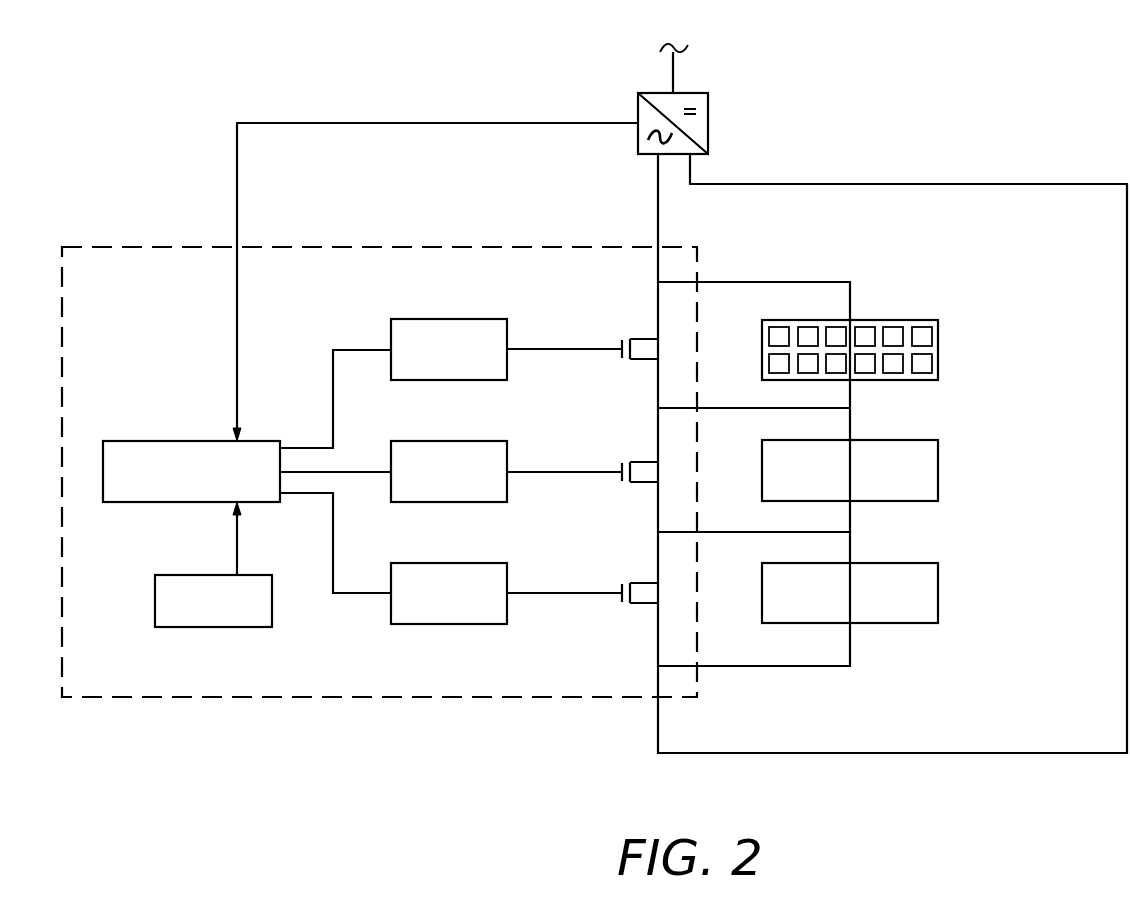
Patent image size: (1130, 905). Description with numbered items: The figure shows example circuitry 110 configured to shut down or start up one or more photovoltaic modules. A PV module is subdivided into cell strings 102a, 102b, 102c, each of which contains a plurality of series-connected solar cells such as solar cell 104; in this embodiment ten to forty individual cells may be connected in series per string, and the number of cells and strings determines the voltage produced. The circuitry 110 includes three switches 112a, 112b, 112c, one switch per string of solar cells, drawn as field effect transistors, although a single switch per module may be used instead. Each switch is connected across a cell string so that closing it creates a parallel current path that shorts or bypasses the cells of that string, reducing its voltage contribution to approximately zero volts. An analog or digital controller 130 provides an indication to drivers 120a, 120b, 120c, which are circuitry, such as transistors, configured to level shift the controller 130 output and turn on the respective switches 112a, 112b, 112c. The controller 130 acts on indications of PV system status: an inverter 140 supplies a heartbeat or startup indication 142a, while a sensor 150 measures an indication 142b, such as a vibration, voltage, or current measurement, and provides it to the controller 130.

The cell string 102a is at (897, 331).
The cell string 102b is at (925, 440).
The cell string 102c is at (925, 563).
The solar cell 104 is at (925, 362).
The circuitry 110 is at (147, 289).
The switch 112a is at (648, 339).
The switch 112b is at (648, 462).
The switch 112c is at (648, 583).
The driver 120a is at (460, 319).
The driver 120b is at (460, 441).
The driver 120c is at (460, 563).
The controller 130 is at (203, 441).
The inverter 140 is at (708, 118).
The indication 142a is at (432, 123).
The indication 142b is at (237, 535).
The sensor 150 is at (203, 575).